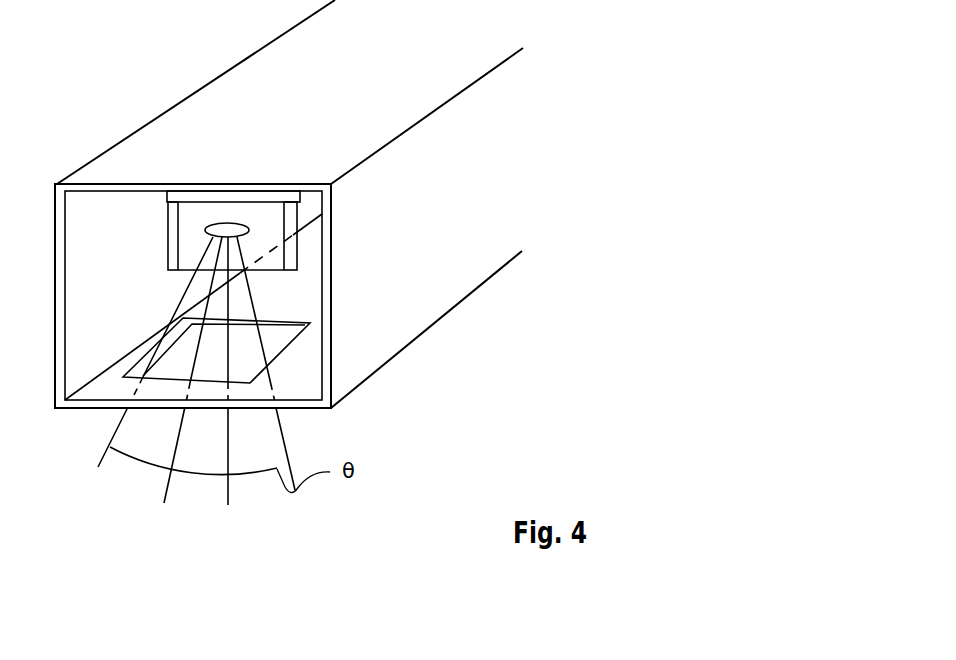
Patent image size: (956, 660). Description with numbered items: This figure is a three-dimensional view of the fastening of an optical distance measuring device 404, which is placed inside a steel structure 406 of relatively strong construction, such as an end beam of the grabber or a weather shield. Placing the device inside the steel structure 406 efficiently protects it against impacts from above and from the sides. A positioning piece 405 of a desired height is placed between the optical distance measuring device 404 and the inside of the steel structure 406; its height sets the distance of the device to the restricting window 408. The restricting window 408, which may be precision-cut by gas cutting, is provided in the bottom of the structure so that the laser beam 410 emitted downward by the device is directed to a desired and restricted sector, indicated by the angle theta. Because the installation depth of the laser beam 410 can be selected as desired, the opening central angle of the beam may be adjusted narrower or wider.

The optical distance measuring device 404 is at (247, 219).
The positioning piece 405 is at (306, 193).
The steel structure 406 is at (80, 157).
The restricting window 408 is at (162, 340).
The laser beam 410 is at (230, 447).